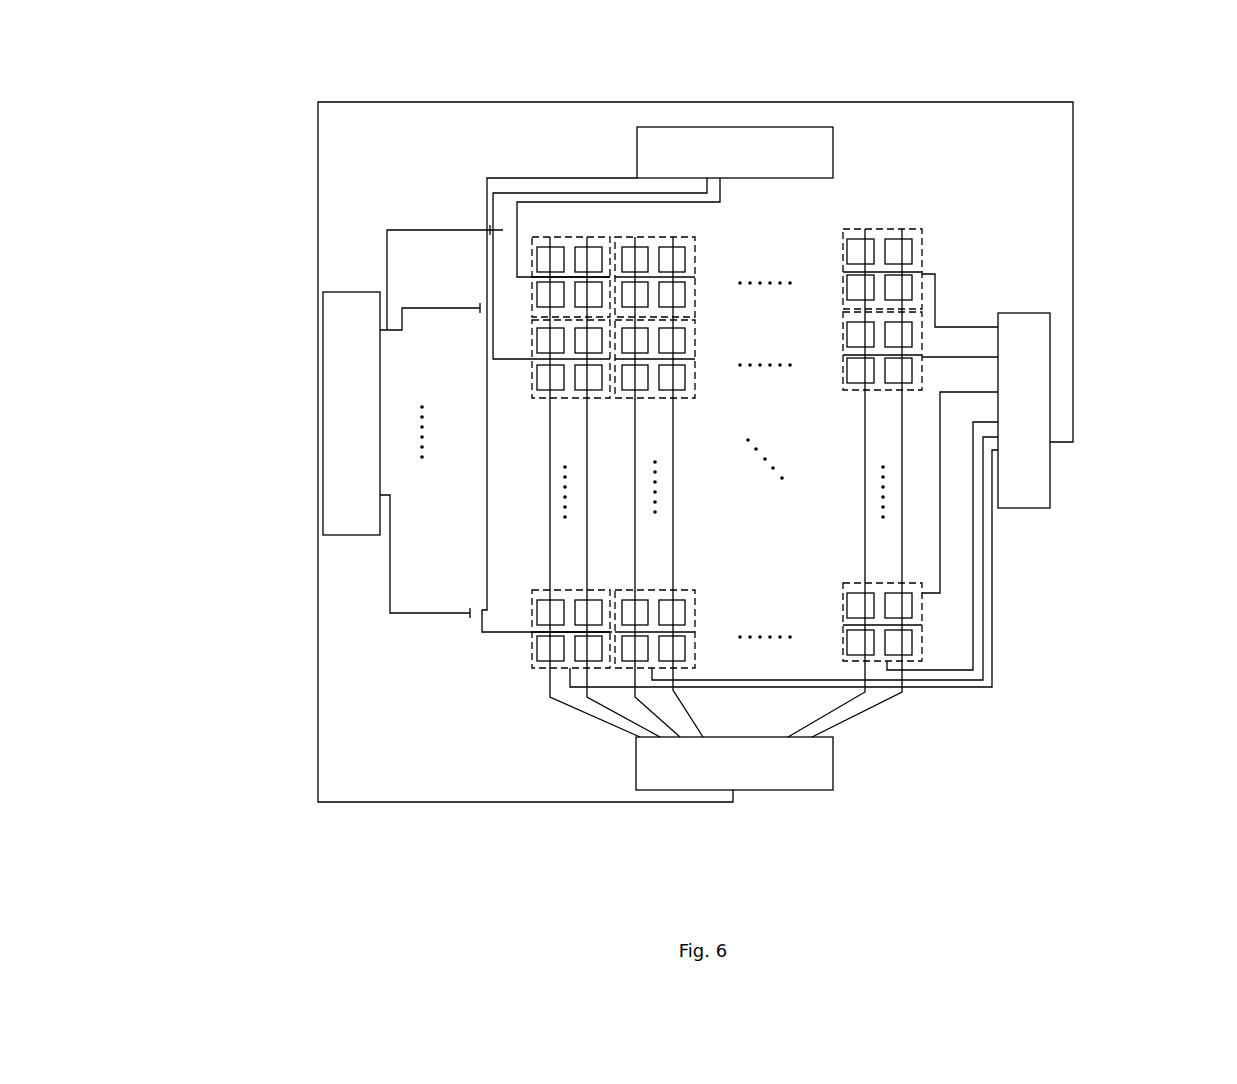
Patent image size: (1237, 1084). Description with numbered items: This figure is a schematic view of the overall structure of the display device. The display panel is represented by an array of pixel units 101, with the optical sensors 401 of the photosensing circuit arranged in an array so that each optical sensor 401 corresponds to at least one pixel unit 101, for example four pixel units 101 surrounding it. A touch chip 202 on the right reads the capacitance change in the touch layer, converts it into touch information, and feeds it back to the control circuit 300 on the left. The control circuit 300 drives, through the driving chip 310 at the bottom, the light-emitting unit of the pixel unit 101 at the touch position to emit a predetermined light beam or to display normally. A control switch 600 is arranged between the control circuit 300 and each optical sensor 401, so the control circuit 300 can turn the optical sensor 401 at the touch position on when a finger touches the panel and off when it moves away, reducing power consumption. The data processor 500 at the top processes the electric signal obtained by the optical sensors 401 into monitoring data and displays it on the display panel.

The pixel unit 101 is at (584, 243).
The touch chip 202 is at (1047, 494).
The control circuit 300 is at (342, 357).
The driving chip 310 is at (785, 777).
The optical sensor 401 is at (567, 240).
The data processor 500 is at (808, 140).
The control switch 600 is at (500, 232).